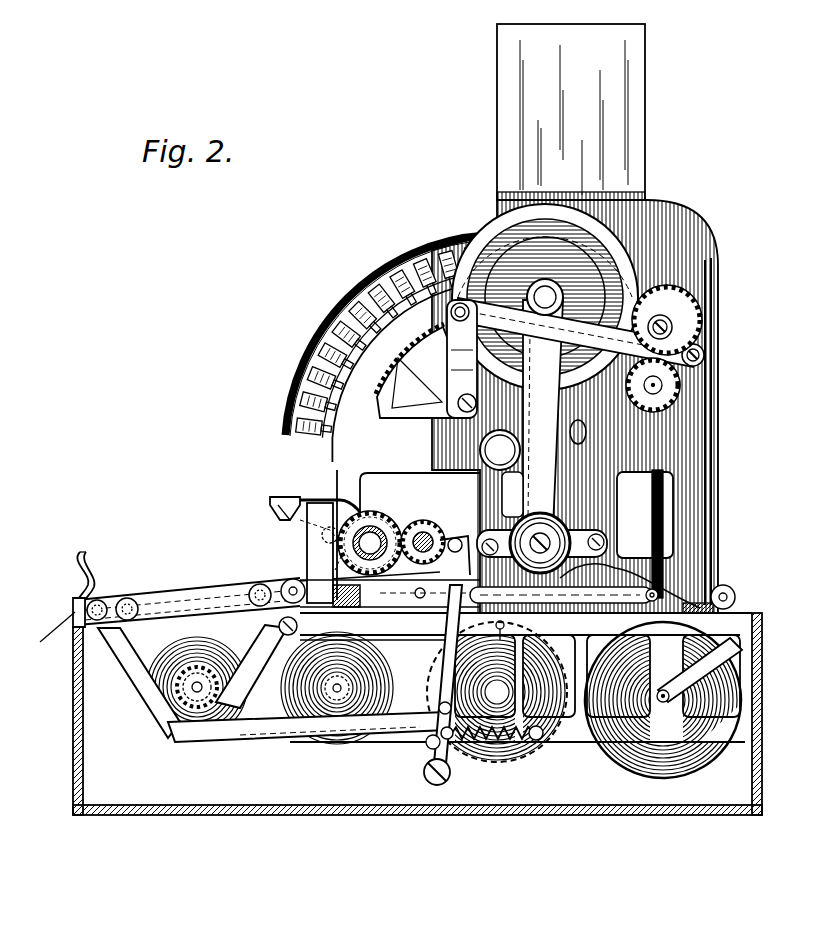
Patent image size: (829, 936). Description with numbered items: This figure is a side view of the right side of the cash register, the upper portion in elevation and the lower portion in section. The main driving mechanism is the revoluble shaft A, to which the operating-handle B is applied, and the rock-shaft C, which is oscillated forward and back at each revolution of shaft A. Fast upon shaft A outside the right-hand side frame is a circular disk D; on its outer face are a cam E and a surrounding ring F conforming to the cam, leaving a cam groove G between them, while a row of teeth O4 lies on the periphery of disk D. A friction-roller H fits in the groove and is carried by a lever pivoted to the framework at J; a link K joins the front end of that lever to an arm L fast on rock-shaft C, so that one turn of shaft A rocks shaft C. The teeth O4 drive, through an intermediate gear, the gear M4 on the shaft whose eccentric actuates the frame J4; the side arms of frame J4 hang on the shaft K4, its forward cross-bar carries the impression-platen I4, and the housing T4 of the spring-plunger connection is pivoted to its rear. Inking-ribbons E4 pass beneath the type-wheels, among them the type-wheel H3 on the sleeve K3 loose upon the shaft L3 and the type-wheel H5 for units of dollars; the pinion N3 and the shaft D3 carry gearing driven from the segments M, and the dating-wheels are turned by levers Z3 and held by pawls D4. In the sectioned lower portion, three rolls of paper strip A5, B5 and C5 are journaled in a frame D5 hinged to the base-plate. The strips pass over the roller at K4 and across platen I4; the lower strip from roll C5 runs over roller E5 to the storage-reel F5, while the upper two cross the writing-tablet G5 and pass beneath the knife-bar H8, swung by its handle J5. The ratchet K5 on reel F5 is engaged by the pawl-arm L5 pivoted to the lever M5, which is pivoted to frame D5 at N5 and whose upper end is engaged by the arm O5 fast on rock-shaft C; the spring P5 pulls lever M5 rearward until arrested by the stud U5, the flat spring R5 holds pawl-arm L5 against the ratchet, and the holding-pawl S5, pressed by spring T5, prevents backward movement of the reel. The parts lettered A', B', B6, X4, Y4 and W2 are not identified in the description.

The revoluble shaft A is at (545, 297).
The curved scale sector A' is at (388, 336).
The operating-handle B is at (553, 414).
The scale teeth B' is at (385, 354).
The roller B6 is at (568, 528).
The rock-shaft C is at (480, 452).
The circular disk D is at (545, 293).
The cam E is at (560, 266).
The surrounding ring F is at (596, 246).
The cam groove G is at (625, 262).
The friction-roller H is at (572, 318).
The stud J is at (706, 353).
The link K is at (440, 352).
The arm L is at (458, 420).
The segment M is at (385, 400).
The gear M4 is at (675, 296).
The row of teeth O4 is at (585, 429).
The slide bar X4 is at (645, 524).
The slot Y4 is at (666, 482).
The tubular housing T4 is at (606, 524).
The bar W2 is at (602, 594).
The storage-reel F5 is at (706, 603).
The sleeve K3 is at (355, 498).
The keys or levers Z3 is at (272, 505).
The spring-holding pawls D4 is at (340, 503).
The shaft L3 is at (371, 522).
The type-wheel H3 is at (378, 530).
The pinion N3 is at (418, 530).
The shaft D3 is at (428, 535).
The arm O5 is at (454, 538).
The writing-tablet G5 is at (195, 600).
The roller E5 is at (292, 585).
The handle J5 is at (86, 560).
The knife-bar H8 is at (72, 600).
The roll of paper strip A5 is at (696, 765).
The ratchet K5 is at (193, 708).
The roll of paper strip C5 is at (362, 745).
The roll of paper strip B5 is at (530, 755).
The type-wheel H5 is at (663, 708).
The frame D5 is at (150, 690).
The pawl-arm L5 is at (282, 742).
The holding-pawl S5 is at (262, 652).
The spring T5 is at (289, 620).
The inking-ribbons E4 is at (346, 605).
The impression-platen I4 is at (390, 603).
The shaft K4 is at (425, 607).
The frame J4 is at (592, 598).
The stud U5 is at (501, 637).
The lever M5 is at (430, 760).
The pivot N5 is at (448, 778).
The flat spring R5 is at (426, 744).
The spring P5 is at (493, 740).